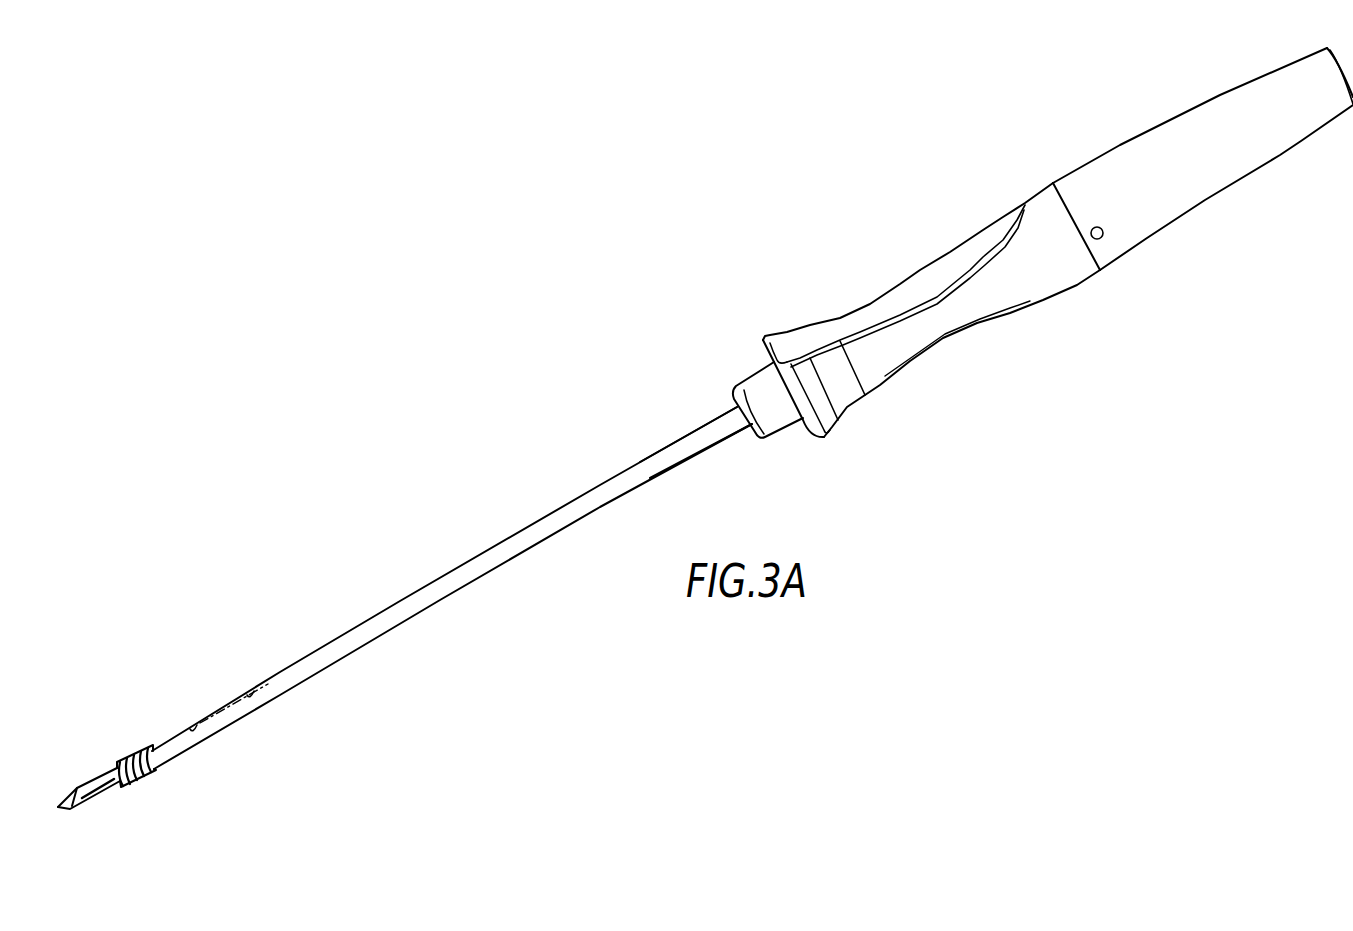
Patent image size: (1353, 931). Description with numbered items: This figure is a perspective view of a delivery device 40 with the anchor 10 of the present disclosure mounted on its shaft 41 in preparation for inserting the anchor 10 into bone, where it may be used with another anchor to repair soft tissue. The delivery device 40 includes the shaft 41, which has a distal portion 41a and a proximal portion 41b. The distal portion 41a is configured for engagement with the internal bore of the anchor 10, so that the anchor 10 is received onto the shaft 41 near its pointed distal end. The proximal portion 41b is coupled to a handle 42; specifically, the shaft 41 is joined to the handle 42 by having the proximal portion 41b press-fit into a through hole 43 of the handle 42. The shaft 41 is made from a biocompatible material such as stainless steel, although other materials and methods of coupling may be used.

The anchor 10 is at (131, 755).
The delivery device 40 is at (866, 278).
The shaft 41 is at (468, 561).
The distal portion 41a is at (82, 790).
The proximal portion 41b is at (718, 410).
The handle 42 is at (1042, 200).
The through hole 43 is at (752, 433).